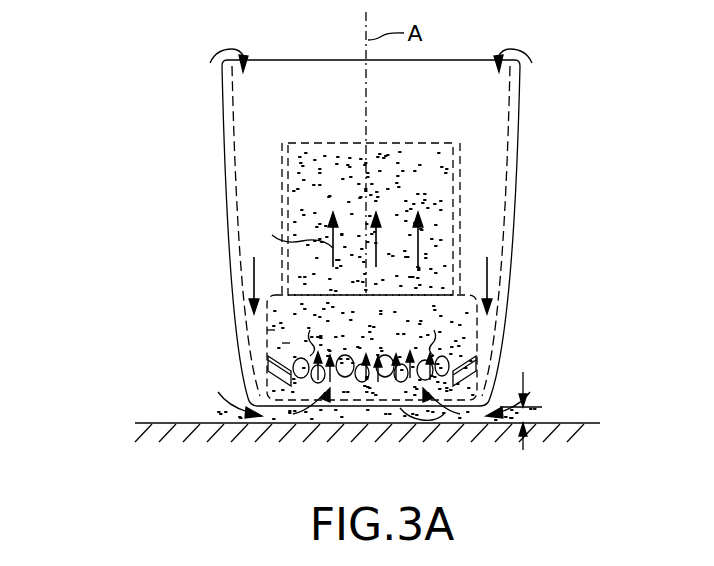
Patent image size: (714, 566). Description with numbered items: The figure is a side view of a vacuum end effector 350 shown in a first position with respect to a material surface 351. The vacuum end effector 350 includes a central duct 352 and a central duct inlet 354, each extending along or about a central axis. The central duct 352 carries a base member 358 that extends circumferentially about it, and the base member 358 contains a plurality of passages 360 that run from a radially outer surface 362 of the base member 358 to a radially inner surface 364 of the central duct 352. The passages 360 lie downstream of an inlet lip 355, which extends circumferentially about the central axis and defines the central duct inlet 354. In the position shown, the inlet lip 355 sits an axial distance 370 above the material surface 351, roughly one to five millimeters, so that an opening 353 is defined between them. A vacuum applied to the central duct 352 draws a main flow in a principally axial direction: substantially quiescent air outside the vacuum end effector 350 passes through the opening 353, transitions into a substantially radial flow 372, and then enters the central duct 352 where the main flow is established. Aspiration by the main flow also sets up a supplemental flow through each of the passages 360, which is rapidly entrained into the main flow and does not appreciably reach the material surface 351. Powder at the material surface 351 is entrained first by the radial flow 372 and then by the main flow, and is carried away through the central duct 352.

The vacuum end effector 350 is at (112, 79).
The material surface 351 is at (580, 424).
The central duct 352 is at (460, 190).
The opening 353 is at (381, 424).
The central duct inlet 354 is at (520, 118).
The inlet lip 355 is at (430, 420).
The base member 358 is at (478, 335).
The plurality of passages 360 is at (265, 363).
The radially outer surface 362 is at (266, 330).
The radially inner surface 364 is at (290, 343).
The axial distance 370 is at (530, 383).
The radial flow 372 is at (232, 418).